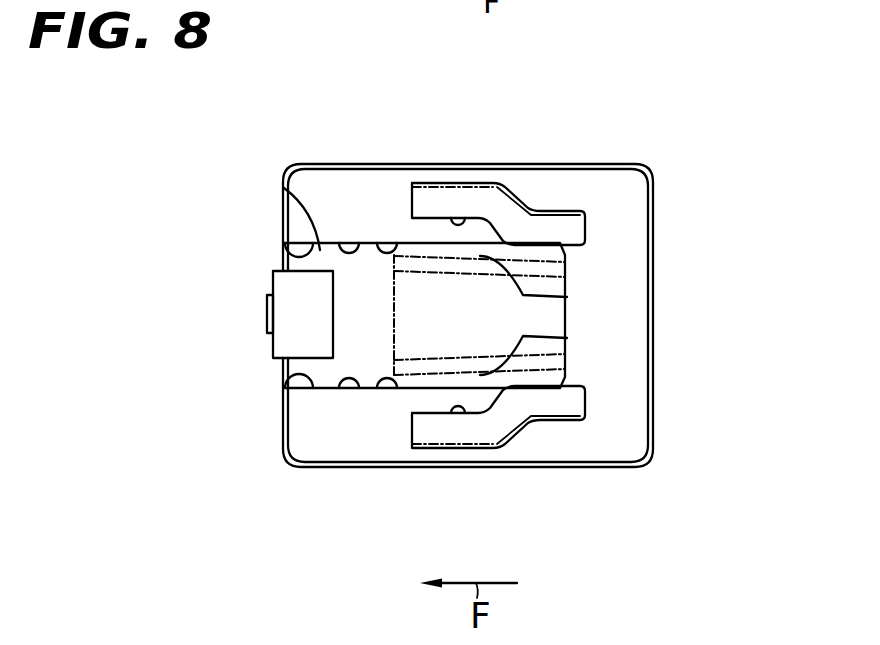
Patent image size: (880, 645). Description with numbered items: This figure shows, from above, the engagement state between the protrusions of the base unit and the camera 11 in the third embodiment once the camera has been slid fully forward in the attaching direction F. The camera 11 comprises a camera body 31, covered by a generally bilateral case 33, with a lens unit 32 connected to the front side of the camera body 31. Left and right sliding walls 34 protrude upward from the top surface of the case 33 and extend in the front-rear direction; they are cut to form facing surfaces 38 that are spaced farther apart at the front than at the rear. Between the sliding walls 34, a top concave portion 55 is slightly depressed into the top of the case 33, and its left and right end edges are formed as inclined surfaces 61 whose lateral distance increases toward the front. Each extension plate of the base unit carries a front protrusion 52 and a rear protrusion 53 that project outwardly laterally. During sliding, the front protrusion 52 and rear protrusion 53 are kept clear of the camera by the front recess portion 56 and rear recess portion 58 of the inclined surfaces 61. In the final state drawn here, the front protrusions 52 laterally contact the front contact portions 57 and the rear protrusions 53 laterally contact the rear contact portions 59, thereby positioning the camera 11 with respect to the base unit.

The camera 11 is at (668, 194).
The camera body 31 is at (668, 436).
The lens unit 32 is at (273, 289).
The case 33 is at (620, 447).
The sliding wall 34 is at (500, 183).
The facing surface 38 is at (459, 212).
The front protrusion 52 is at (407, 243).
The rear protrusion 53 is at (555, 208).
The top concave portion 55 is at (284, 188).
The front recess portion 56 is at (337, 243).
The front contact portion 57 is at (385, 243).
The rear recess portion 58 is at (567, 297).
The rear contact portion 59 is at (567, 278).
The inclined surface 61 is at (288, 256).